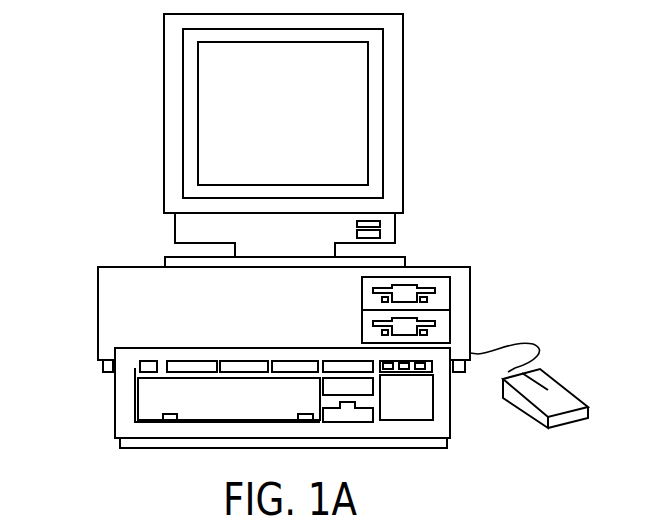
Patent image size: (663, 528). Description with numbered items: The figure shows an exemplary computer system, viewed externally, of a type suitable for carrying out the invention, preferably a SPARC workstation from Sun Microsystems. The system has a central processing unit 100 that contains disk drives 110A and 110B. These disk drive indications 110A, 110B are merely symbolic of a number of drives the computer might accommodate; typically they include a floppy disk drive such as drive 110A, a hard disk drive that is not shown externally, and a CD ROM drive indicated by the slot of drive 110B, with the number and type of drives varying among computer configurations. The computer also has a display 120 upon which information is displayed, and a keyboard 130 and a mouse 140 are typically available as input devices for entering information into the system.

The central processing unit 100 is at (252, 319).
The disk drive 110A is at (360, 285).
The disk drive 110B is at (360, 318).
The display 120 is at (403, 117).
The keyboard 130 is at (113, 397).
The mouse 140 is at (570, 387).